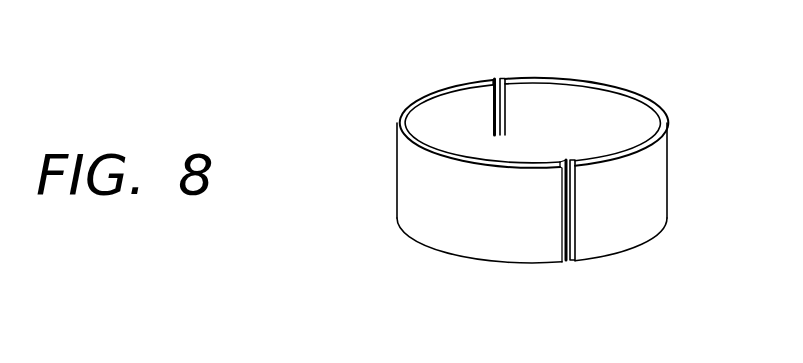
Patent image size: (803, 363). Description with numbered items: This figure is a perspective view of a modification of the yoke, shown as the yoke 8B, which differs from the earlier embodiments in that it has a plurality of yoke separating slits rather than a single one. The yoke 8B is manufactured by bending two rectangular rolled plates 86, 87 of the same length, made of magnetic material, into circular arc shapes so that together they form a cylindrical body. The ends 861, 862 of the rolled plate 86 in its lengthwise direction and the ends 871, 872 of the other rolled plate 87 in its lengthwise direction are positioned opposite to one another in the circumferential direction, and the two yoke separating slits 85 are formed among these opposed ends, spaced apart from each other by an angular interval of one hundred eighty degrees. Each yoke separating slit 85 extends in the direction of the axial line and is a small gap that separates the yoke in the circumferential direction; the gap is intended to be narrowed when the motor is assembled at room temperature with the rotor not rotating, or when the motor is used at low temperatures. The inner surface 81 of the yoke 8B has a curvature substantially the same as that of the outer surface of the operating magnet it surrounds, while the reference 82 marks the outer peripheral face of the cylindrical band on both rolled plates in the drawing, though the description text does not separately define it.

The yoke 8B is at (538, 170).
The inner surface 81 is at (473, 133).
The outer peripheral surface 82 is at (403, 188).
The yoke separating slit 85 is at (495, 72).
The rolled plate 86 is at (481, 175).
The end of the rolled plate 861 is at (563, 202).
The end of the rolled plate 862 is at (494, 99).
The rolled plate 87 is at (613, 159).
The end of the other rolled plate 871 is at (578, 207).
The end of the other rolled plate 872 is at (510, 105).